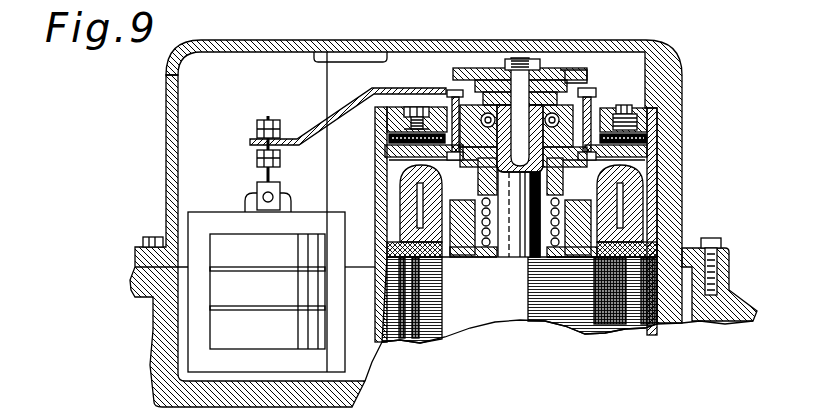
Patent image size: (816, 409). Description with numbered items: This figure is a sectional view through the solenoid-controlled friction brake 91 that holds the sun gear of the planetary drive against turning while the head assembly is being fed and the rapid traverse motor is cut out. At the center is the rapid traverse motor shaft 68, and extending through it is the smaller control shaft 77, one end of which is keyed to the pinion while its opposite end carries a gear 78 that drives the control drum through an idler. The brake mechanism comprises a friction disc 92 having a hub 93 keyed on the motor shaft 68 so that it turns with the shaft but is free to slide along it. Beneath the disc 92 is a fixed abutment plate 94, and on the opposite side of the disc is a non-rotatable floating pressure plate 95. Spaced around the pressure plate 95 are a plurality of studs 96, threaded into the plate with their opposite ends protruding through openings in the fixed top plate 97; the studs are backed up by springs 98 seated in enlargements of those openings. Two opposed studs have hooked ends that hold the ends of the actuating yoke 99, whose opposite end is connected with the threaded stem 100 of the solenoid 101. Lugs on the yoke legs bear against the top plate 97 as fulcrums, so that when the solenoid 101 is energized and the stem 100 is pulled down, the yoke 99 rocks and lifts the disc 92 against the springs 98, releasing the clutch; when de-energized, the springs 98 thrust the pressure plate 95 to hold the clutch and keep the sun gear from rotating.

The rapid traverse motor shaft 68 is at (518, 252).
The control shaft 77 is at (523, 57).
The gear 78 is at (470, 70).
The friction brake 91 is at (656, 121).
The friction disc 92 is at (392, 148).
The hub 93 is at (489, 180).
The fixed abutment plate 94 is at (652, 157).
The floating pressure plate 95 is at (389, 131).
The studs 96 is at (418, 107).
The fixed top plate 97 is at (604, 107).
The springs 98 is at (408, 107).
The actuating yoke 99 is at (316, 126).
The threaded stem 100 is at (268, 116).
The solenoid 101 is at (230, 253).